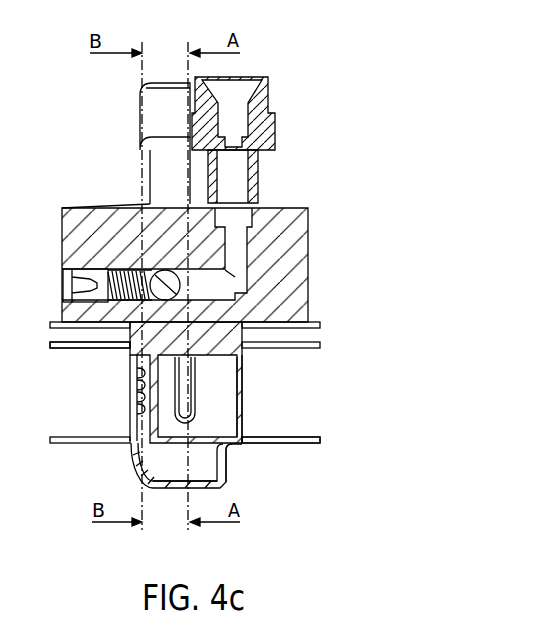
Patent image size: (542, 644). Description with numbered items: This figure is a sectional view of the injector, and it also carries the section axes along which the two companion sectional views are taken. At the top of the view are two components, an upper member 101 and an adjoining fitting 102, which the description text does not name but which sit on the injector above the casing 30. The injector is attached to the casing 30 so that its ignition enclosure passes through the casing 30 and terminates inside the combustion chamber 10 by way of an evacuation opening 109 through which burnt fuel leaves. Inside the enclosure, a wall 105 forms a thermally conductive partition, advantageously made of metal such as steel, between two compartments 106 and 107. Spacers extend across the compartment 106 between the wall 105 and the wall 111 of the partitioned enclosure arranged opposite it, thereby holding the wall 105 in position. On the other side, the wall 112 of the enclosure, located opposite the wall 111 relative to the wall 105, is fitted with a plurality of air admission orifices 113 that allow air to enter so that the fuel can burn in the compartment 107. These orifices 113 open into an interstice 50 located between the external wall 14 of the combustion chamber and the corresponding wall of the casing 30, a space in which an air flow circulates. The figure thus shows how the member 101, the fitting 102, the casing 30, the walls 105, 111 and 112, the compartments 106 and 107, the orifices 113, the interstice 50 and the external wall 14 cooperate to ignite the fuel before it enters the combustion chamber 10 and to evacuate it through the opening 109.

The combustion chamber 10 is at (287, 469).
The external wall of the combustion chamber 14 is at (305, 443).
The casing 30 is at (316, 323).
The interstice 50 is at (93, 372).
The cap 101 is at (170, 93).
The connector fitting 102 is at (243, 121).
The wall 105 is at (155, 428).
The compartment 106 is at (224, 390).
The compartment 107 is at (173, 472).
The evacuation opening 109 is at (234, 471).
The wall of the partitioned enclosure 111 is at (241, 422).
The wall of the partitioned enclosure 112 is at (132, 427).
The air admission orifices 113 is at (132, 412).